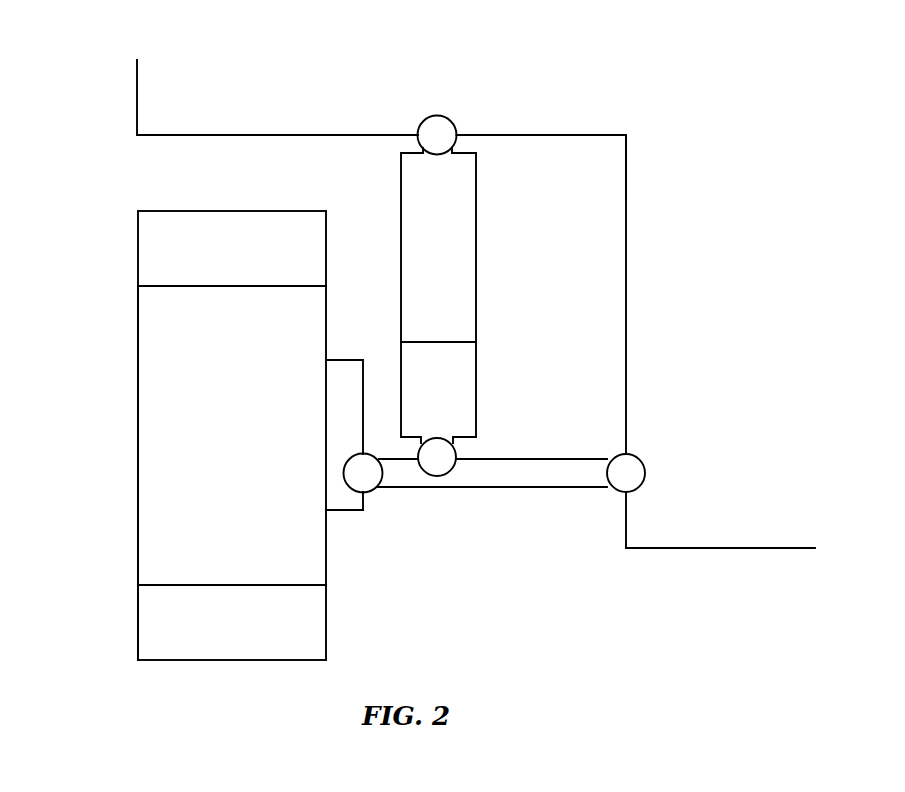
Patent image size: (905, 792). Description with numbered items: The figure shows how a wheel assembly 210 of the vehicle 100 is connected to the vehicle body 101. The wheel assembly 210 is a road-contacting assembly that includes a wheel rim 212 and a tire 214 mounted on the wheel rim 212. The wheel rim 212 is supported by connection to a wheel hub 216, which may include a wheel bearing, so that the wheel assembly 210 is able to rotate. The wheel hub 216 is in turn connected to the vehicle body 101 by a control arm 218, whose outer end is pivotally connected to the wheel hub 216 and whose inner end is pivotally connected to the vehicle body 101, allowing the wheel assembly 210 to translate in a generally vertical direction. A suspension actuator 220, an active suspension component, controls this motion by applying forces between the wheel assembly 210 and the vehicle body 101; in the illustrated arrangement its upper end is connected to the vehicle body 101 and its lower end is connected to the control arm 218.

The vehicle 100 is at (100, 63).
The vehicle body 101 is at (590, 133).
The wheel assembly 210 is at (119, 325).
The wheel rim 212 is at (138, 545).
The tire 214 is at (138, 620).
The wheel hub 216 is at (350, 512).
The control arm 218 is at (552, 457).
The suspension actuator 220 is at (477, 230).